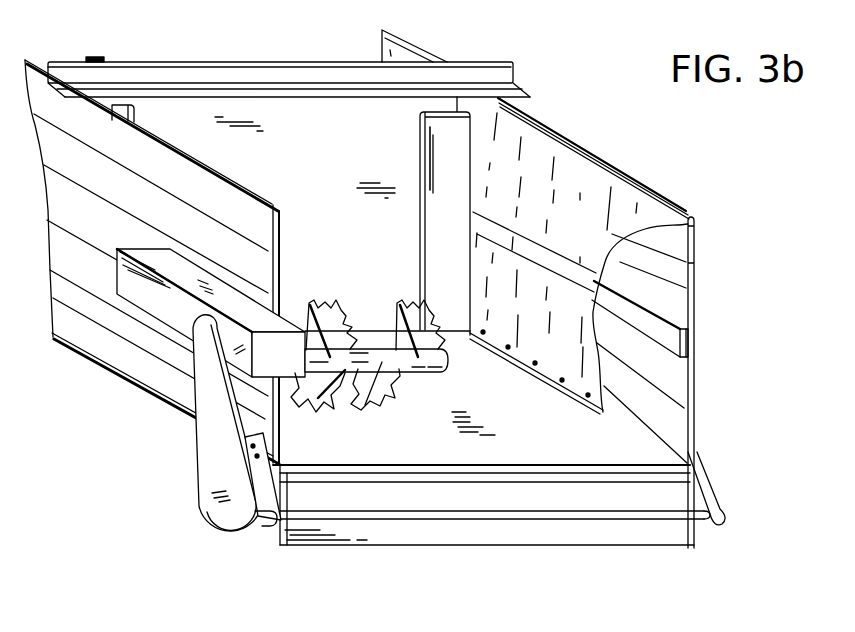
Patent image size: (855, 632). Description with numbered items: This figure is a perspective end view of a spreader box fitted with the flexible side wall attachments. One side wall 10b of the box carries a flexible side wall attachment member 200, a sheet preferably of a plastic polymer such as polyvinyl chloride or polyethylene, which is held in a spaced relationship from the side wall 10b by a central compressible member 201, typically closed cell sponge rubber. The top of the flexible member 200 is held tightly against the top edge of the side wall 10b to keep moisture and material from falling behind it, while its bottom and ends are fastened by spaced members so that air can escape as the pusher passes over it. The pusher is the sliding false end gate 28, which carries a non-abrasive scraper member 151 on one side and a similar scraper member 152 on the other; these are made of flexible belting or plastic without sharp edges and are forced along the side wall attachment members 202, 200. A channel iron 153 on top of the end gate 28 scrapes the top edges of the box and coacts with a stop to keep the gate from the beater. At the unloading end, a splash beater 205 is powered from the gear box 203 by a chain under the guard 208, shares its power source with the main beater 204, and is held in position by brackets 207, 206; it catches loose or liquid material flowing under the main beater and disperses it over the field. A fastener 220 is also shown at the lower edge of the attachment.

The side wall 10b is at (702, 217).
The sliding false end gate 28 is at (193, 113).
The non-abrasive scraper member 151 is at (127, 110).
The non-abrasive scraper member 152 is at (457, 170).
The channel iron 153 is at (492, 63).
The flexible side wall attachment member 200 is at (593, 210).
The compressible member 201 is at (685, 346).
The side wall attachment member 202 is at (285, 290).
The gear box 203 is at (177, 312).
The main beater 204 is at (372, 350).
The splash beater 205 is at (548, 549).
The bracket 206 is at (712, 485).
The bracket 207 is at (268, 522).
The guard 208 is at (206, 526).
The rivet 220 is at (592, 394).